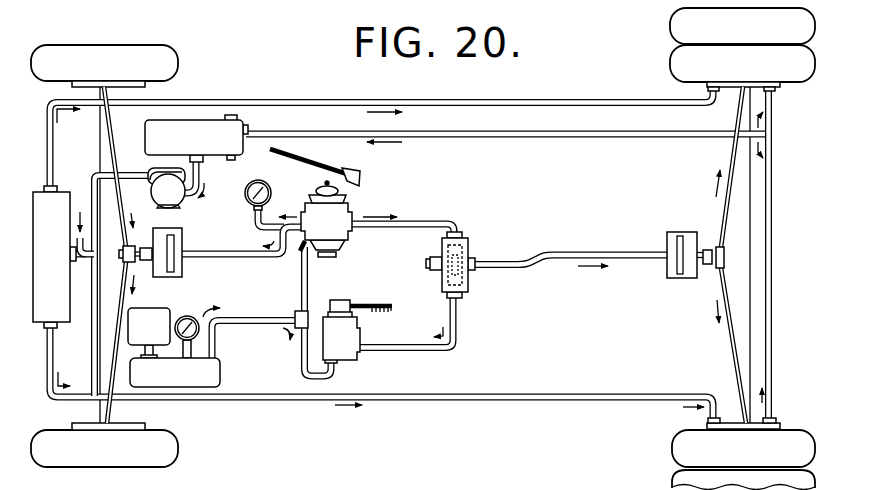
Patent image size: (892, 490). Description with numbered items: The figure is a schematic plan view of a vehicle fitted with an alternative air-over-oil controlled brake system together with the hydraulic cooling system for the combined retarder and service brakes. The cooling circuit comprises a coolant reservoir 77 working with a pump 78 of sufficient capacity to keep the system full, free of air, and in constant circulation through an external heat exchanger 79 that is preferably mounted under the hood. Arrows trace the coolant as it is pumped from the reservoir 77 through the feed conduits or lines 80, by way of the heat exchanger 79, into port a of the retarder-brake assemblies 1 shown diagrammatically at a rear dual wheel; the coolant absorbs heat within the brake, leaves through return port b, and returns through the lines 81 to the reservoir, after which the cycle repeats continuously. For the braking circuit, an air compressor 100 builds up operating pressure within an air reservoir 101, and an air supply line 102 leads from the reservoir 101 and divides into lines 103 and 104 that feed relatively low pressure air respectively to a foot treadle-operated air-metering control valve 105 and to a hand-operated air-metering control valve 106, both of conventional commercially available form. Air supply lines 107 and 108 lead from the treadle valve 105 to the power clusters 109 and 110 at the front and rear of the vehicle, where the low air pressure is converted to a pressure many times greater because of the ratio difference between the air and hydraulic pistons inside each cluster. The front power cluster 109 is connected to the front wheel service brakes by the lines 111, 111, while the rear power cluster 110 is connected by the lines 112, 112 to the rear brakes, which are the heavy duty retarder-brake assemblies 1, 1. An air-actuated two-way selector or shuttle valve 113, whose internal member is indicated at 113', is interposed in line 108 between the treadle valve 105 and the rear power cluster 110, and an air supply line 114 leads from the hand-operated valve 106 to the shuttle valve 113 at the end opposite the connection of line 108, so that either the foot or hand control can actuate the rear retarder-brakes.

The retarder-brake assembly 1 is at (786, 86).
The coolant reservoir 77 is at (145, 130).
The pump 78 is at (151, 172).
The heat exchanger 79 is at (54, 257).
The feed conduits 80 is at (276, 100).
The return lines 81 is at (553, 137).
The air compressor 100 is at (160, 312).
The air reservoir 101 is at (221, 374).
The air supply line 102 is at (256, 316).
The air line 103 is at (301, 267).
The air line 104 is at (301, 350).
The foot treadle-operated air-metering control valve 105 is at (315, 203).
The hand-operated air-metering control valve 106 is at (357, 331).
The air supply line 107 is at (228, 258).
The air supply line 108 is at (423, 222).
The power cluster 109 is at (168, 228).
The power cluster 110 is at (688, 232).
The lines 111 is at (115, 254).
The lines 112 is at (729, 153).
The shuttle valve 113 is at (477, 254).
The shuttle valve member 113' is at (489, 280).
The air supply line 114 is at (407, 351).
The port a is at (708, 89).
The return port b is at (777, 89).